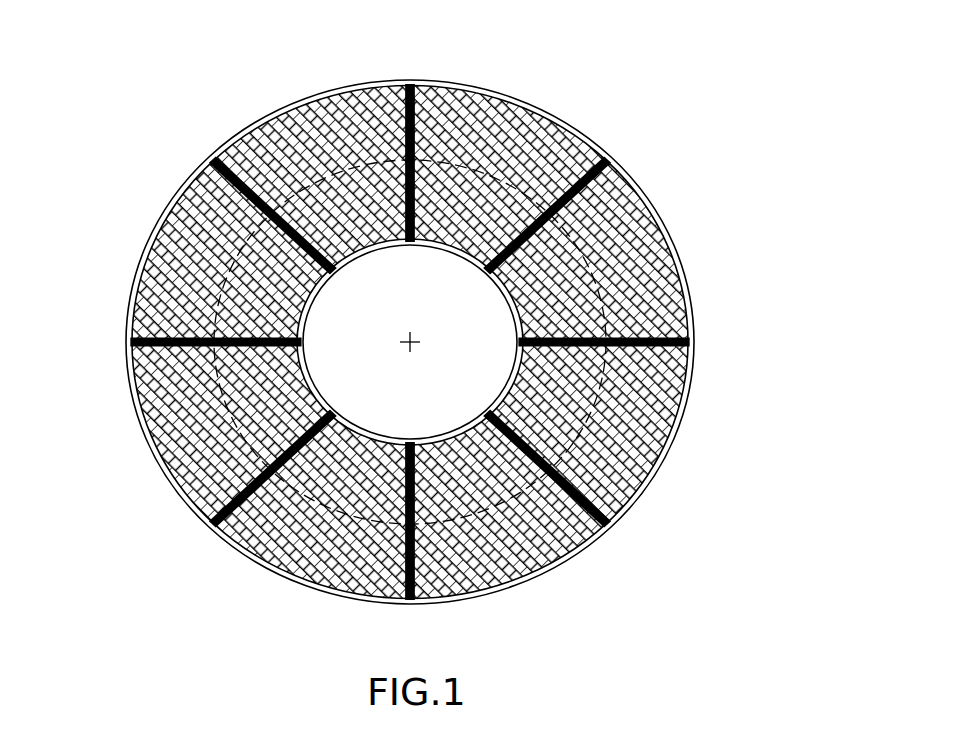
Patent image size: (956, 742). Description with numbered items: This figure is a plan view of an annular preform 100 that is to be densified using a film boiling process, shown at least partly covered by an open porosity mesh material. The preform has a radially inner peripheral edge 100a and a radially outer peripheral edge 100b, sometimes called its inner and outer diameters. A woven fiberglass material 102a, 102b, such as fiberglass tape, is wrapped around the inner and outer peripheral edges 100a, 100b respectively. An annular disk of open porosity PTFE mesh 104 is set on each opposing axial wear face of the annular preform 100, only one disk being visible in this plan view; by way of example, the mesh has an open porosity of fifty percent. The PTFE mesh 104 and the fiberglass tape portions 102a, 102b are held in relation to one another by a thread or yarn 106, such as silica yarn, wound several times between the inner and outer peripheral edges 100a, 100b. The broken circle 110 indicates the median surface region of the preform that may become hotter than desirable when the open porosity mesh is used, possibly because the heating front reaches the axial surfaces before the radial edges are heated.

The annular preform 100 is at (426, 325).
The radially inner peripheral edge 100a is at (362, 428).
The radially outer peripheral edge 100b is at (690, 320).
The woven fiberglass material 102a is at (437, 440).
The woven fiberglass material 102b is at (689, 382).
The open porosity PTFE mesh 104 is at (155, 413).
The thread or yarn 106 is at (242, 170).
The broken circle 110 is at (622, 268).